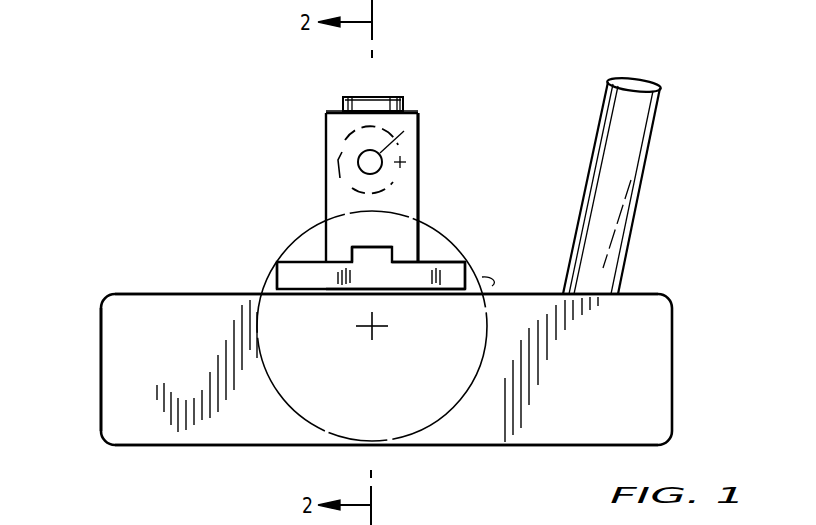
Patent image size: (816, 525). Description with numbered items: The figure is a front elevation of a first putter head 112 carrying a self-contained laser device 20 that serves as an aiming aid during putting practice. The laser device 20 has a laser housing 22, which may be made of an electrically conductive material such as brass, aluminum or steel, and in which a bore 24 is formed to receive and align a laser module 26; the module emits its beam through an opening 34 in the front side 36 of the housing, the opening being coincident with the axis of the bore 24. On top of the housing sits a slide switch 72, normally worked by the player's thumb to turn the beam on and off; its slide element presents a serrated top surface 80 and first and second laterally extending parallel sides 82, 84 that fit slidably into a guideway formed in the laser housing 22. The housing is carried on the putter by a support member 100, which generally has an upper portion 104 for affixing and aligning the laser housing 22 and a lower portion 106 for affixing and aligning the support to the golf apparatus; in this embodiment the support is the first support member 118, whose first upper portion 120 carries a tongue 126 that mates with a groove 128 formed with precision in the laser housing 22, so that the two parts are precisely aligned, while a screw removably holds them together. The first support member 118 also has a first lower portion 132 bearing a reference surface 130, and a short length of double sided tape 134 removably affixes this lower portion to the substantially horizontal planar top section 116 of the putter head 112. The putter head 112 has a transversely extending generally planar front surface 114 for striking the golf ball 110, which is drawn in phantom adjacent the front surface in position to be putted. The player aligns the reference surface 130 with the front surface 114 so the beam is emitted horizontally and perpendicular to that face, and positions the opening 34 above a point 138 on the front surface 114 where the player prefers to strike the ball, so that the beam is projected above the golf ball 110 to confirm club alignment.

The self-contained laser device 20 is at (396, 90).
The laser housing 22 is at (326, 127).
The bore 24 is at (340, 150).
The laser module 26 is at (333, 177).
The opening 34 is at (421, 127).
The front side 36 is at (410, 160).
The slide switch 72 is at (404, 100).
The serrated top surface 80 is at (350, 97).
The first laterally extending parallel side 82 is at (408, 104).
The second laterally extending parallel side 84 is at (343, 105).
The support member 100 is at (312, 258).
The upper portion 104 is at (418, 200).
The lower portion 106 is at (418, 278).
The golf ball 110 is at (286, 408).
The first putter head 112 is at (674, 318).
The front surface 114 is at (653, 410).
The top section 116 is at (101, 385).
The first support member 118 is at (278, 276).
The first upper portion 120 is at (405, 238).
The tongue 126 is at (436, 250).
The groove 128 is at (360, 252).
The reference surface 130 is at (482, 278).
The first lower portion 132 is at (382, 273).
The double sided tape 134 is at (358, 292).
The point 138 is at (365, 333).